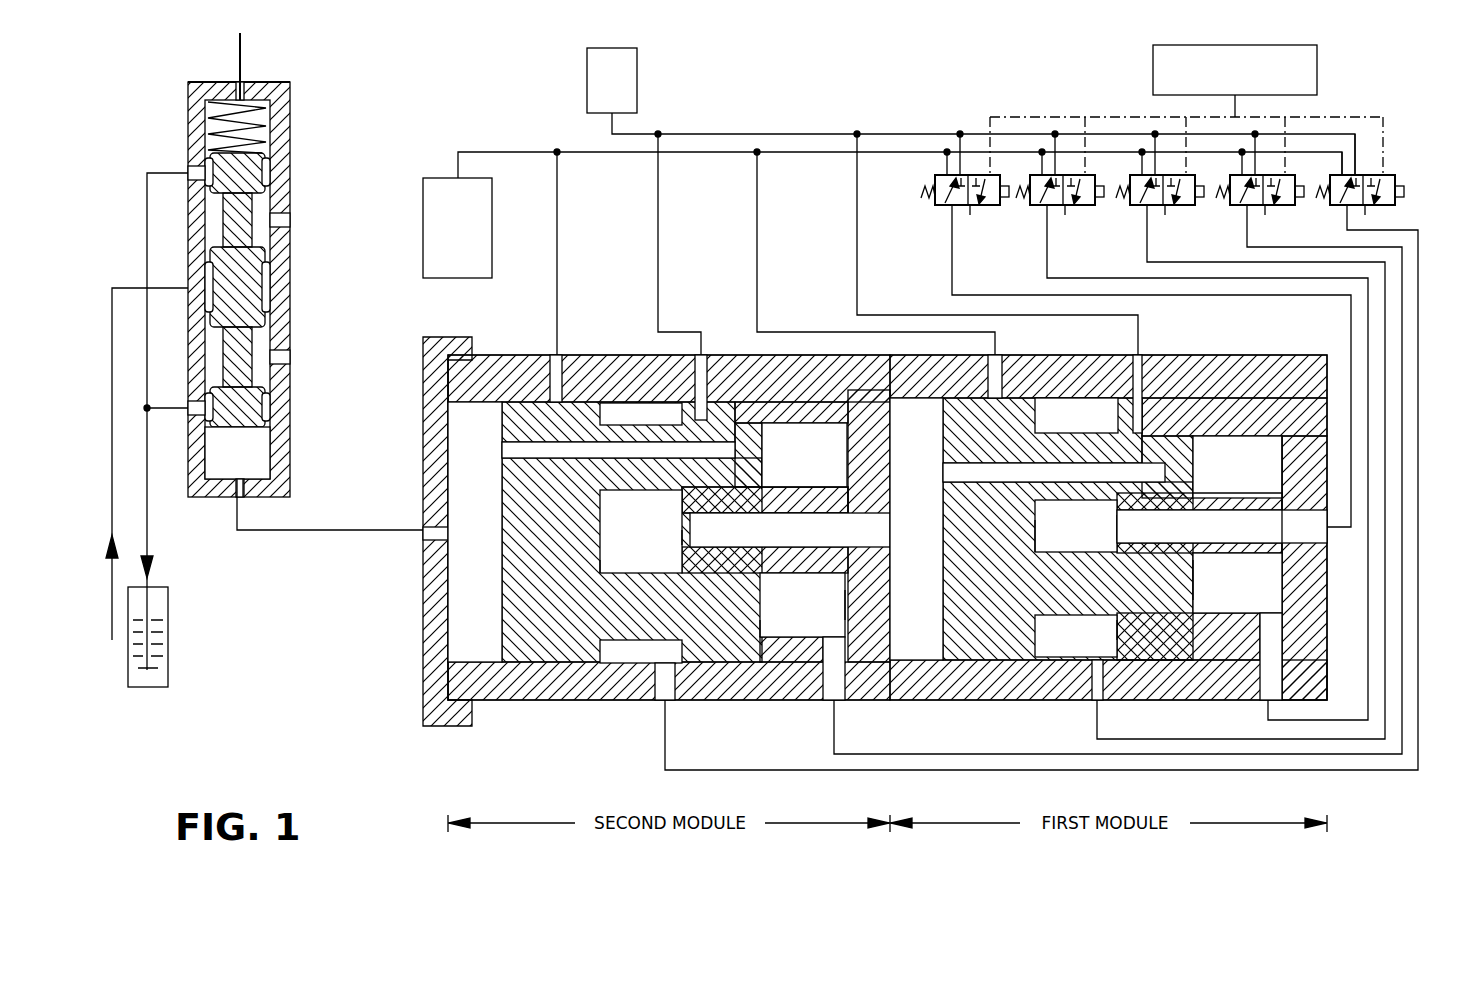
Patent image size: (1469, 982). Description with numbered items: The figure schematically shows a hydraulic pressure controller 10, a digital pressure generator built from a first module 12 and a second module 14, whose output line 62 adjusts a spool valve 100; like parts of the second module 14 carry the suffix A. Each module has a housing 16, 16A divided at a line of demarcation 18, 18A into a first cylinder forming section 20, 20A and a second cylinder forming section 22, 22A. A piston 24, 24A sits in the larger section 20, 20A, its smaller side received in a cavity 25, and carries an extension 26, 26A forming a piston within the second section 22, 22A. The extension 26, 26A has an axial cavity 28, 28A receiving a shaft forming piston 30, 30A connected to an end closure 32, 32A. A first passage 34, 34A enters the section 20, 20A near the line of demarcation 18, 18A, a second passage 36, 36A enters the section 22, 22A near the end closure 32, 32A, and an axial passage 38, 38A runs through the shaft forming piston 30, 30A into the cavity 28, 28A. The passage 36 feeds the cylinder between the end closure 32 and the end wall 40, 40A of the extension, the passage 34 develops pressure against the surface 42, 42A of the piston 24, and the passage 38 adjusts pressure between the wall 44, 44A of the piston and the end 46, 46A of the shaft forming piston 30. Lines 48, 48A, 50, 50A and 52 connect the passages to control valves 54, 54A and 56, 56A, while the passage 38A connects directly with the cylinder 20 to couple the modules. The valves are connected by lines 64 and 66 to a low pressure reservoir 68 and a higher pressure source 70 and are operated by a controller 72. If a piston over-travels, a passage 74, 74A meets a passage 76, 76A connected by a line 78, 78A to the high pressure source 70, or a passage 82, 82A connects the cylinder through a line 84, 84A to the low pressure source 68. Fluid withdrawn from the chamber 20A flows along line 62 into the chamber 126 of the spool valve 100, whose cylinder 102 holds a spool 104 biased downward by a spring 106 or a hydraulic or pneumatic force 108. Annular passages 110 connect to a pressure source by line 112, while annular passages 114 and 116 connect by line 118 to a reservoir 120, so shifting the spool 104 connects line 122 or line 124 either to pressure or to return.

The hydraulic pressure controller 10 is at (519, 348).
The first module 12 is at (1199, 348).
The second module 14 is at (637, 350).
The housing 16 is at (1243, 357).
The housing 16A is at (548, 704).
The line of demarcation 18 is at (1118, 632).
The line of demarcation 18A is at (682, 655).
The first cylinder forming section 20 is at (916, 529).
The first cylinder forming section 20A is at (475, 532).
The second cylinder forming section 22 is at (1237, 583).
The second cylinder forming section 22A is at (817, 605).
The piston 24 is at (960, 508).
The piston 24A is at (520, 598).
The cavity 25 is at (1076, 415).
The extension 26 is at (1195, 568).
The extension 26A is at (762, 627).
The cavity 28 is at (1076, 545).
The cavity 28A is at (641, 531).
The shaft forming piston 30 is at (1248, 498).
The shaft forming piston 30A is at (807, 497).
The end closure 32 is at (1295, 468).
The end closure 32A is at (850, 444).
The first hydraulic flow passage 34 is at (1102, 660).
The first hydraulic flow passage 34A is at (660, 704).
The second hydraulic passage 36 is at (1270, 612).
The second hydraulic passage 36A is at (838, 628).
The axial passage 38 is at (1222, 526).
The axial passage 38A is at (790, 530).
The end wall 40 is at (1195, 455).
The end wall 40A is at (762, 583).
The surface 42 is at (1036, 632).
The surface 42A is at (608, 413).
The wall 44 is at (1036, 510).
The wall 44A is at (603, 557).
The end 46 is at (1118, 540).
The end 46A is at (682, 543).
The hydraulic line 48 is at (1145, 232).
The hydraulic line 48A is at (1352, 228).
The hydraulic line 50 is at (1047, 240).
The hydraulic line 50A is at (1245, 224).
The hydraulic line 52 is at (950, 240).
The control valve 54 is at (1165, 212).
The control valve 54A is at (1368, 210).
The control valve 56 is at (1065, 212).
The control valve 56A is at (1265, 212).
The output line 62 is at (316, 535).
The line 64 is at (505, 150).
The line 66 is at (612, 128).
The reservoir 68 is at (423, 229).
The higher pressure source 70 is at (587, 80).
The controller 72 is at (1317, 72).
The passage 74 is at (960, 473).
The passage 74A is at (510, 447).
The passage 76 is at (1139, 357).
The passage 76A is at (700, 357).
The line 78 is at (857, 229).
The line 78A is at (658, 229).
The passage 82 is at (999, 357).
The passage 82A is at (562, 360).
The line 84 is at (757, 229).
The line 84A is at (557, 229).
The spool valve 100 is at (300, 115).
The cylinder 102 is at (285, 430).
The spool 104 is at (262, 148).
The spring 106 is at (290, 86).
The hydraulic or pneumatic force 108 is at (243, 50).
The annular passages 110 is at (273, 297).
The line 112 is at (112, 288).
The annular passage 114 is at (273, 403).
The annular passage 116 is at (272, 178).
The line 118 is at (147, 205).
The reservoir 120 is at (168, 647).
The line 122 is at (290, 222).
The line 124 is at (290, 357).
The chamber 126 is at (248, 455).